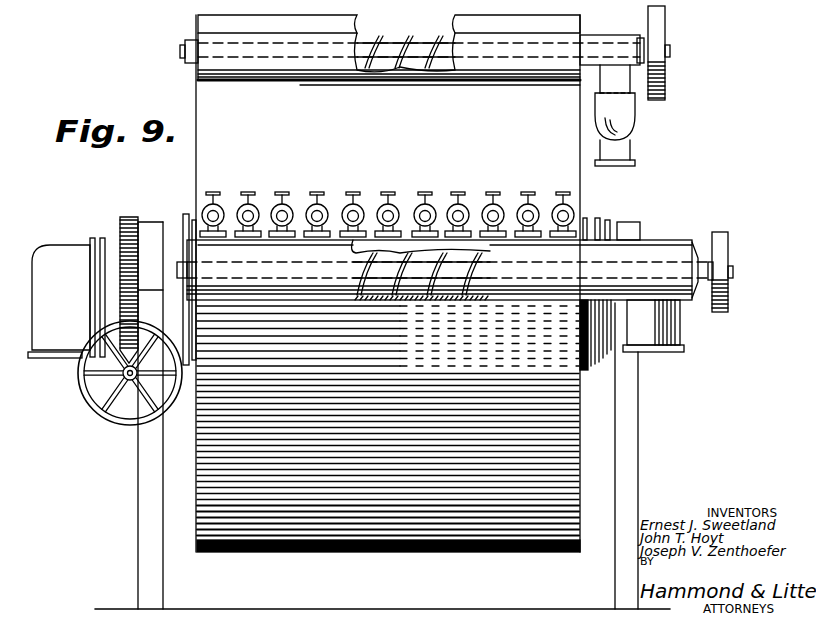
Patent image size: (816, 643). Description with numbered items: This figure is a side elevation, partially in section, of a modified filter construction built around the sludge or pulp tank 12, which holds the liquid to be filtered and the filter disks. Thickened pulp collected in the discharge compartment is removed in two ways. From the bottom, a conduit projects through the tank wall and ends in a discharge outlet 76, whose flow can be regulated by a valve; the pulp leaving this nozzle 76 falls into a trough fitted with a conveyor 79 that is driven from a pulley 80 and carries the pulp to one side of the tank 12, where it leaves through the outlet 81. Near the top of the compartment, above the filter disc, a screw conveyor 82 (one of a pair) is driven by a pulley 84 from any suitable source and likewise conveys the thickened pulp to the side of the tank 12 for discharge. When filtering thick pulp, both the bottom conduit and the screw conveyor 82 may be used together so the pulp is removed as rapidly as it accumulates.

The sludge or pulp tank 12 is at (553, 477).
The discharge outlet 76 is at (411, 199).
The conveyor 79 is at (457, 194).
The pulley 80 is at (728, 246).
The outlet 81 is at (677, 352).
The screw conveyor 82 is at (437, 38).
The pulley 84 is at (660, 22).